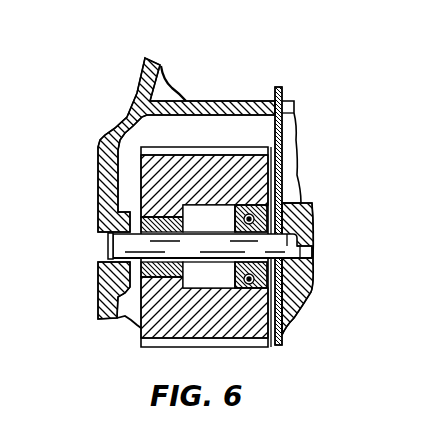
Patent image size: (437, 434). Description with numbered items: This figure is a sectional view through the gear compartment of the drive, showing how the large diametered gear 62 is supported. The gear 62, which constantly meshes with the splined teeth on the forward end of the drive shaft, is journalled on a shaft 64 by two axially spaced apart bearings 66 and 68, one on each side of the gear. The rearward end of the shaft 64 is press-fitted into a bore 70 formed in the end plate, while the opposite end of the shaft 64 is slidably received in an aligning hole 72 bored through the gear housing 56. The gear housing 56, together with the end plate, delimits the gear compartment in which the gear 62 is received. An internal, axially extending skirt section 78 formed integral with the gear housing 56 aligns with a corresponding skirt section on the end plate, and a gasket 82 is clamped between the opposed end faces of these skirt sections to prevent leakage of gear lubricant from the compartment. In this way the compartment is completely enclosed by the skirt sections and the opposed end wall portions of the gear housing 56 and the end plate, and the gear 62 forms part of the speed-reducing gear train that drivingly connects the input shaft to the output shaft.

The gear housing 56 is at (97, 172).
The large diametered gear 62 is at (168, 168).
The shaft 64 is at (120, 247).
The bearing 66 is at (168, 286).
The bearing 68 is at (252, 219).
The bore 70 is at (312, 251).
The aligning hole 72 is at (100, 237).
The skirt section 78 is at (199, 100).
The gasket 82 is at (283, 100).